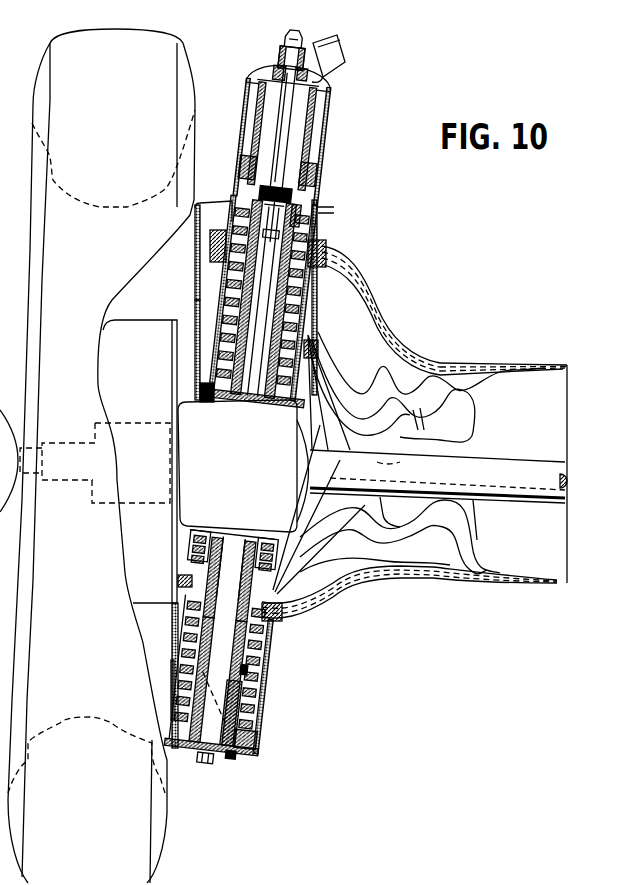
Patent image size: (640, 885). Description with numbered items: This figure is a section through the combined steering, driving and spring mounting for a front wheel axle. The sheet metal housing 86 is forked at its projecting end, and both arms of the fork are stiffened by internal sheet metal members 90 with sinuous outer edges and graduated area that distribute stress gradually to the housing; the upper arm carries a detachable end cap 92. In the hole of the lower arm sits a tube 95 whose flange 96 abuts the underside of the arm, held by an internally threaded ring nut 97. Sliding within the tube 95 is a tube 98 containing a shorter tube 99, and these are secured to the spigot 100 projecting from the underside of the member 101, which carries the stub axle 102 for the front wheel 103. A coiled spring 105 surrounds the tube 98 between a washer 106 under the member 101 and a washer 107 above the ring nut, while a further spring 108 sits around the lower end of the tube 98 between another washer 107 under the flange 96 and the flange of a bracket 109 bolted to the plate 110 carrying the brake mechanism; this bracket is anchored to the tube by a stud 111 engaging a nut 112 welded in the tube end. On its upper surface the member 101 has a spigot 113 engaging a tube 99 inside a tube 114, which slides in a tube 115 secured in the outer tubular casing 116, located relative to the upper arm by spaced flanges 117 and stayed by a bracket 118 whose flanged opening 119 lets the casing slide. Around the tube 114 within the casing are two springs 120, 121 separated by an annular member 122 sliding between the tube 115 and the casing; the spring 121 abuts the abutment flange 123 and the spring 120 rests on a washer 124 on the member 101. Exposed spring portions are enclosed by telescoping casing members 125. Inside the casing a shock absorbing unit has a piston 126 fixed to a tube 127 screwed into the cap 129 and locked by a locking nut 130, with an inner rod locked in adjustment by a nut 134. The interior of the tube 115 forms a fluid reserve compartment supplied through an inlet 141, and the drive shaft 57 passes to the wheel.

The drive shaft 57 is at (527, 467).
The housing 86 is at (548, 365).
The internal sheet metal members 90 is at (413, 410).
The end cap 92 is at (210, 238).
The tube 95 is at (268, 630).
The flange 96 is at (172, 610).
The ring nut 97 is at (319, 464).
The tube 98 is at (257, 690).
The tube 99 is at (248, 343).
The spigot 100 is at (232, 543).
The member 101 is at (243, 466).
The stub axle 102 is at (87, 462).
The front wheel 103 is at (97, 456).
The coiled spring 105 is at (270, 537).
The washer 106 is at (197, 532).
The washer 107 is at (178, 583).
The spring 108 is at (250, 713).
The bracket 109 is at (170, 680).
The plate 110 is at (177, 462).
The stud 111 is at (207, 762).
The nut 112 is at (226, 753).
The spigot 113 is at (253, 387).
The tube 114 is at (283, 283).
The tube 115 is at (308, 117).
The outer tubular casing 116 is at (327, 140).
The spaced flanges 117 is at (207, 257).
The bracket 118 is at (195, 298).
The flanged opening 119 is at (333, 206).
The spring 120 is at (325, 292).
The spring 121 is at (242, 180).
The annular member 122 is at (316, 236).
The abutment flange 123 is at (323, 167).
The washer 124 is at (217, 393).
The casing members 125 is at (310, 353).
The piston 126 is at (265, 220).
The tube 127 is at (280, 117).
The cap 129 is at (273, 68).
The locking nut 130 is at (282, 60).
The nut 134 is at (297, 47).
The inlet 141 is at (332, 53).